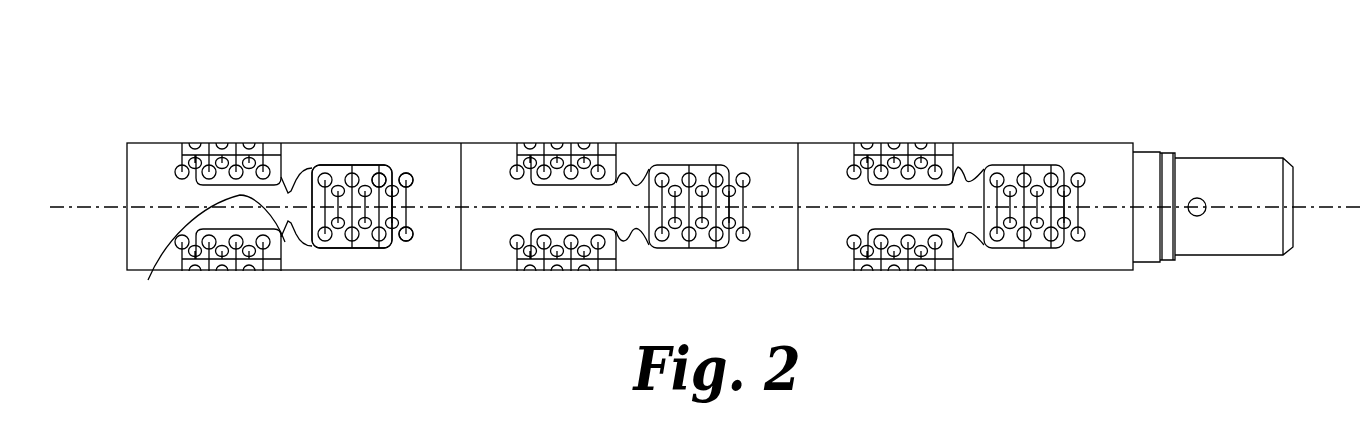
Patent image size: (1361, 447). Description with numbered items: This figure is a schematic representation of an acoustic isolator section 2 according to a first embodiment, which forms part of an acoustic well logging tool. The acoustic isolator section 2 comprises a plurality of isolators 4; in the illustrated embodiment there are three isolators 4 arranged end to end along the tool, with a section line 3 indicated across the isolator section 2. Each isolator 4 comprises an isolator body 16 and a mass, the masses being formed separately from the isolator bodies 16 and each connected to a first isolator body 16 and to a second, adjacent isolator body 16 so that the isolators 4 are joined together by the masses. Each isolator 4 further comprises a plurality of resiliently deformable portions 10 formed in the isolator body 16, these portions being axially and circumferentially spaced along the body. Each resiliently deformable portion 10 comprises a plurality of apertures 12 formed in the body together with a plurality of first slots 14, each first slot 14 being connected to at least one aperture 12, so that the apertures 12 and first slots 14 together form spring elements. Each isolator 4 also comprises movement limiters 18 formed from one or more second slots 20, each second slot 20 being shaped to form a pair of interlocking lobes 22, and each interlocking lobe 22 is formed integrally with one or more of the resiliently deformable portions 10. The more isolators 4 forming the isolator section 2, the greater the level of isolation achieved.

The acoustic isolator section 2 is at (154, 96).
The section line 3 is at (50, 270).
The isolator 4 is at (356, 292).
The resiliently deformable portion 10 is at (213, 150).
The aperture 12 is at (379, 178).
The first slot 14 is at (325, 166).
The isolator body 16 is at (162, 196).
The movement limiter 18 is at (288, 188).
The second slot 20 is at (284, 250).
The interlocking lobe 22 is at (290, 175).